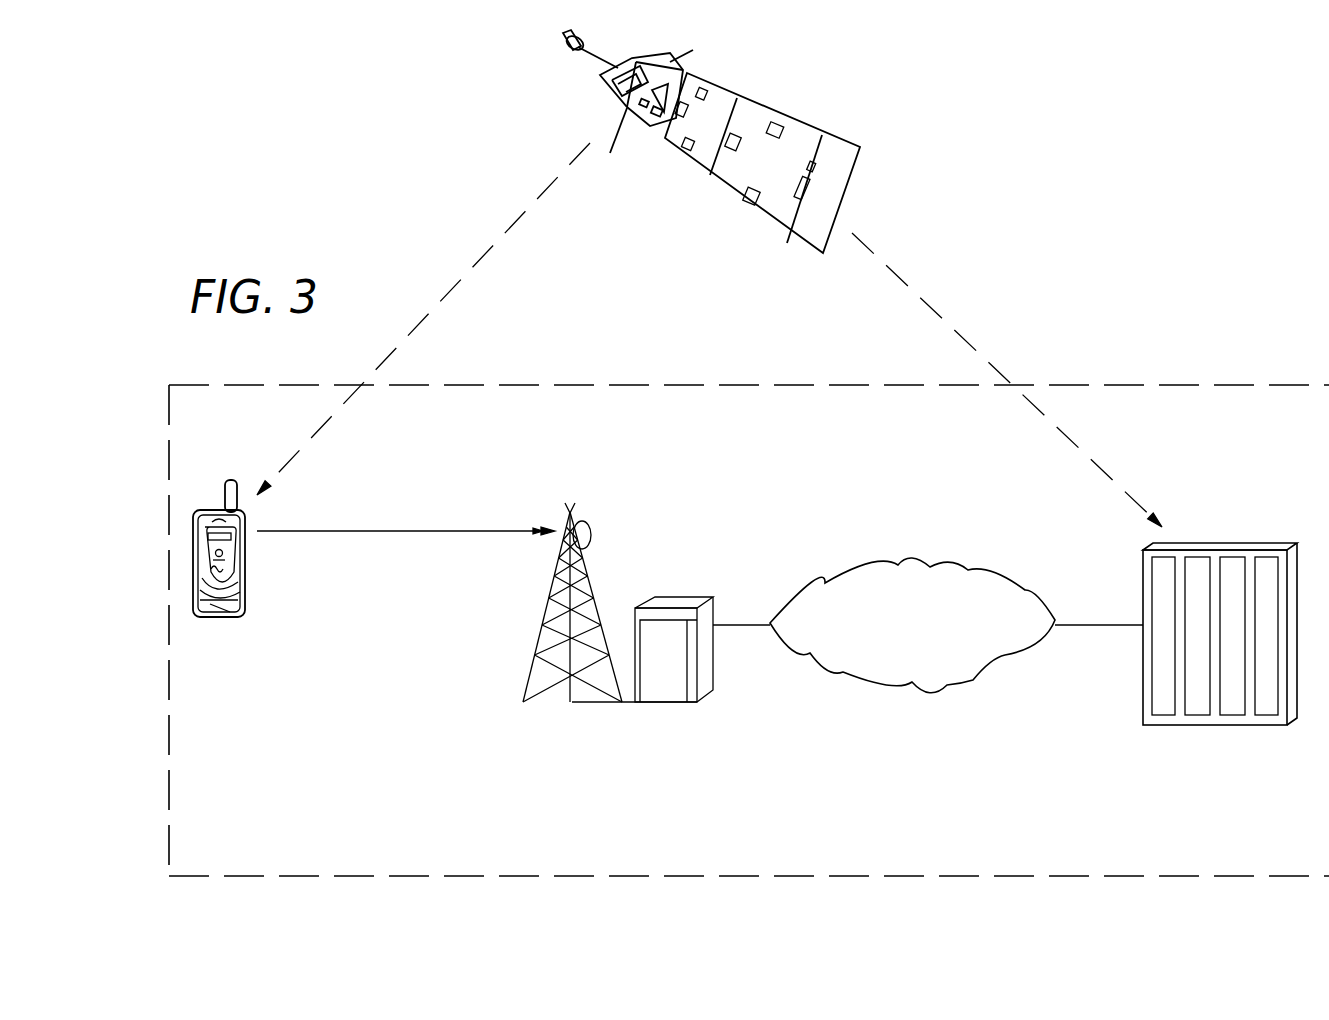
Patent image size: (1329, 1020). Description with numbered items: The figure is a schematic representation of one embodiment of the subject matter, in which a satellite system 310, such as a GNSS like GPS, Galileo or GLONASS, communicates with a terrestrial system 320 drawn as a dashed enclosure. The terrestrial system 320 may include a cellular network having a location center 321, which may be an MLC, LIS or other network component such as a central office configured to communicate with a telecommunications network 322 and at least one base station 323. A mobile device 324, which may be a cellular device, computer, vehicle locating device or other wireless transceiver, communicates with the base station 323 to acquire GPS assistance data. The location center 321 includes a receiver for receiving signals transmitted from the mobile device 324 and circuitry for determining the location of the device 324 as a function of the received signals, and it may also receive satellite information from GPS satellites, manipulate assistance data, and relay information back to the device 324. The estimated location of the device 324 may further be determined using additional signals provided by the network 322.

The satellite system 310 is at (890, 197).
The terrestrial system 320 is at (1170, 385).
The location center 321 is at (1202, 527).
The telecommunications network 322 is at (877, 560).
The base station 323 is at (588, 510).
The mobile device 324 is at (212, 505).